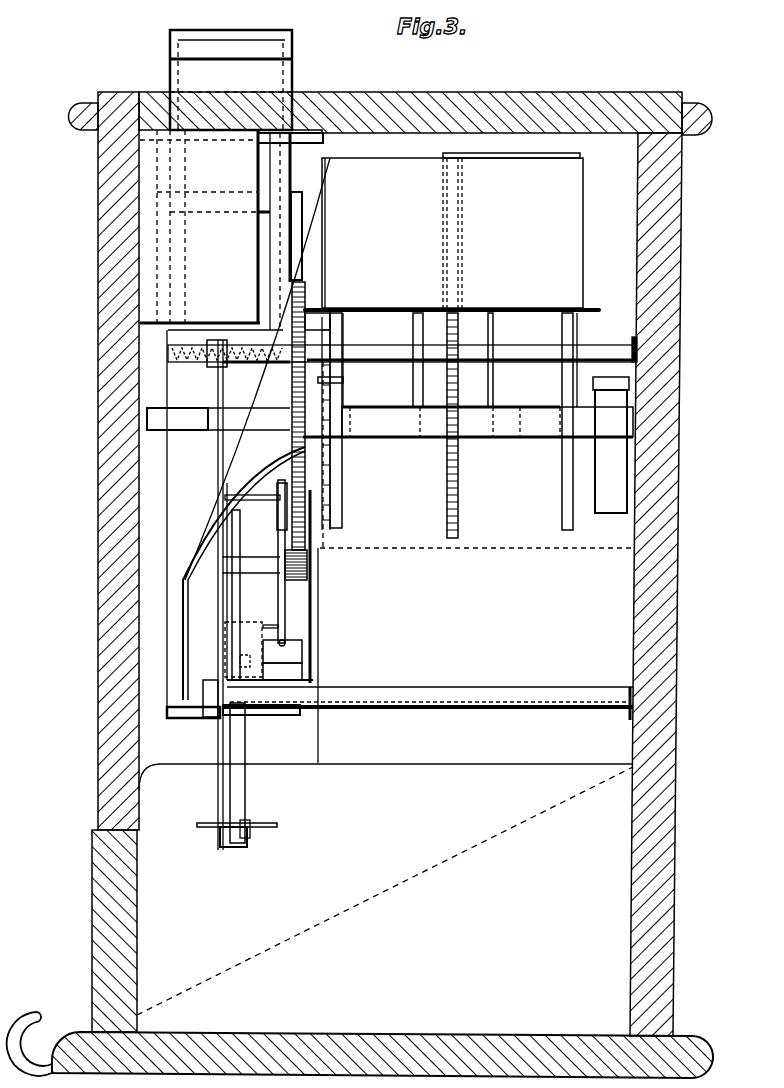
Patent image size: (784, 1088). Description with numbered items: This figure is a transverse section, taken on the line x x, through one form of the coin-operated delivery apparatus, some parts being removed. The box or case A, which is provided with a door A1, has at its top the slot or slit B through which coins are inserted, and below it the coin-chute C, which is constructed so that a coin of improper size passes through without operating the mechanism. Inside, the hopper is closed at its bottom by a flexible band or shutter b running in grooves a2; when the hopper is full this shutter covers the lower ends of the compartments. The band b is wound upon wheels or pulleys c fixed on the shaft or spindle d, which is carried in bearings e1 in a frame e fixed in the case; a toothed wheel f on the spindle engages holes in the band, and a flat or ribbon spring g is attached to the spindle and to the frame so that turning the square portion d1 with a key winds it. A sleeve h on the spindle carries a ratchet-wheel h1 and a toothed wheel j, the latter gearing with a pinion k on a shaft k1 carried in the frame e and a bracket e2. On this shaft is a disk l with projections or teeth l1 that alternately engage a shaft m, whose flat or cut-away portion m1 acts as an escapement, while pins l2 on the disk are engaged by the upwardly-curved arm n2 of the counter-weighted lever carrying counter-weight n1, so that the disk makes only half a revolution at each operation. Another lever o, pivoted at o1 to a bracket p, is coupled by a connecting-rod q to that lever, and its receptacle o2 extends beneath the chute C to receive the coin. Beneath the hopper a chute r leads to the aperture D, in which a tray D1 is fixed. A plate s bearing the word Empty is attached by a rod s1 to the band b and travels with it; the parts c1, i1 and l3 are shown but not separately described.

The box or case A is at (391, 564).
The door A1 is at (118, 461).
The slot or slit B is at (231, 69).
The coin-chute C is at (265, 724).
The aperture D is at (382, 954).
The tray D1 is at (29, 1044).
The grooves a2 is at (307, 314).
The flexible band or shutter b is at (399, 309).
The wheels or pulleys c is at (342, 508).
The spring c1 is at (227, 364).
The shaft or spindle d is at (487, 422).
The square portion d1 is at (218, 419).
The frame e is at (427, 655).
The bearings e1 is at (268, 418).
The bracket e2 is at (311, 614).
The toothed wheel f is at (459, 498).
The flat or ribbon spring g is at (611, 445).
The sleeve h is at (322, 453).
The ratchet-wheel h1 is at (343, 380).
The bracket i1 is at (343, 324).
The toothed wheel j is at (298, 450).
The pinion k is at (308, 560).
The shaft or spindle k1 is at (249, 573).
The disk l is at (278, 540).
The projections or teeth l1 is at (323, 634).
The pins or projections l2 is at (245, 500).
The pin l3 is at (268, 625).
The shaft or spindle m is at (282, 662).
The flat or cut-away portion m1 is at (303, 650).
The counter-weight n1 is at (243, 649).
The upwardly-curved arm n2 is at (243, 595).
The lever o is at (240, 847).
The pivot o1 is at (222, 830).
The enlargement or receptacle o2 is at (250, 825).
The bracket p is at (218, 805).
The connecting-rod q is at (245, 805).
The chute r is at (385, 889).
The plate s is at (511, 145).
The rod s1 is at (463, 233).
The section line x is at (452, 233).